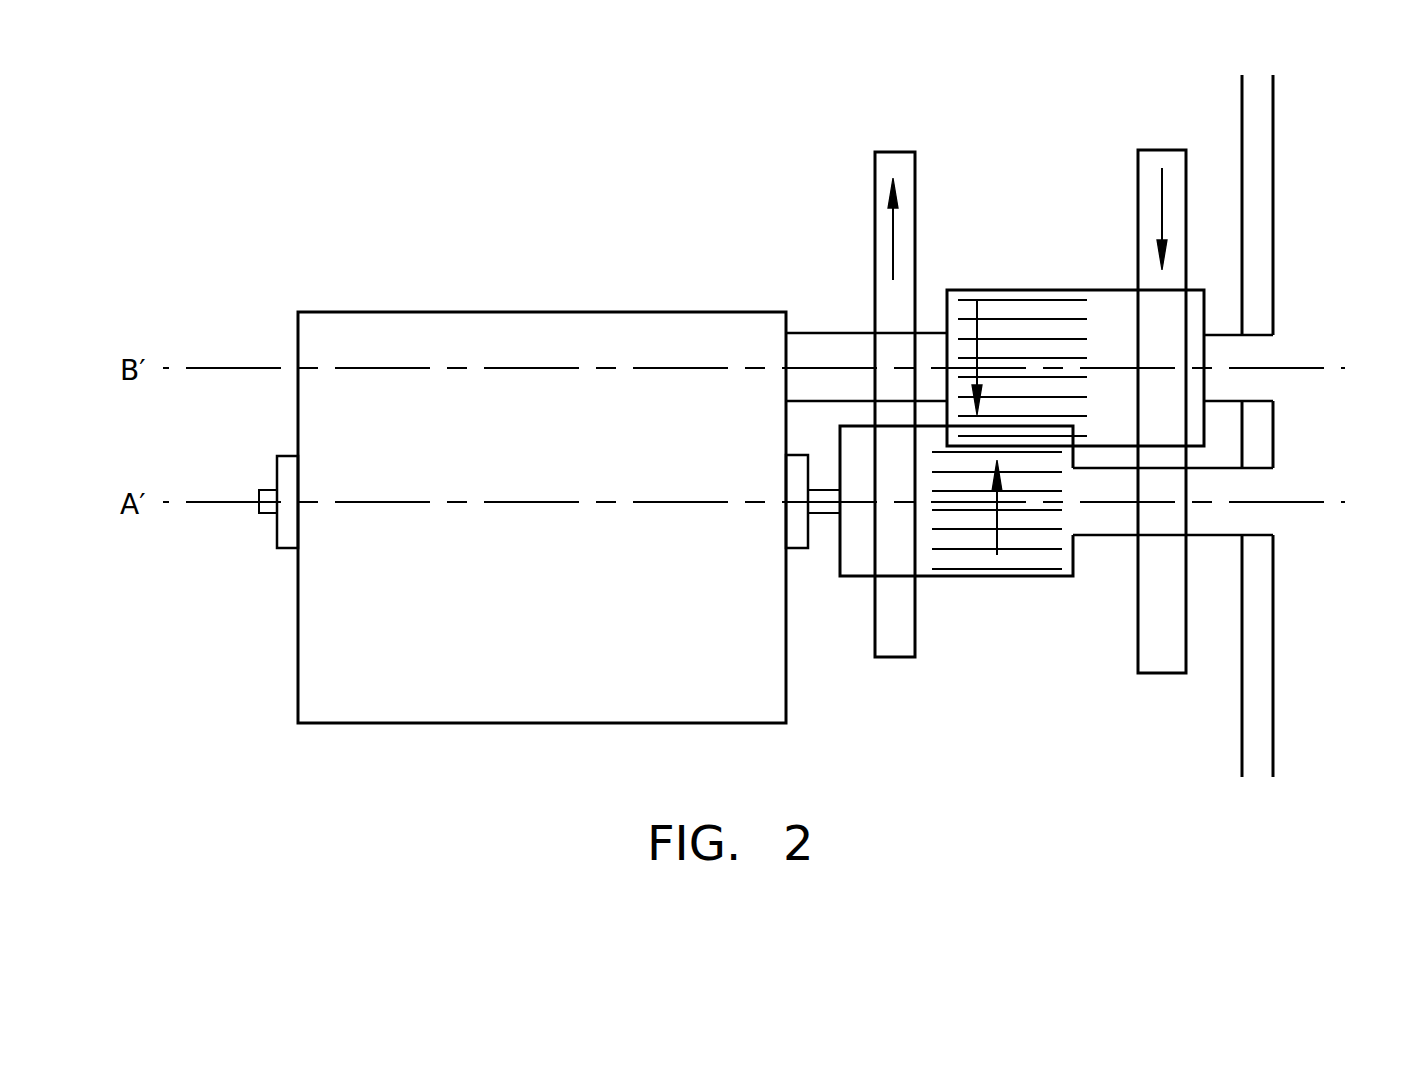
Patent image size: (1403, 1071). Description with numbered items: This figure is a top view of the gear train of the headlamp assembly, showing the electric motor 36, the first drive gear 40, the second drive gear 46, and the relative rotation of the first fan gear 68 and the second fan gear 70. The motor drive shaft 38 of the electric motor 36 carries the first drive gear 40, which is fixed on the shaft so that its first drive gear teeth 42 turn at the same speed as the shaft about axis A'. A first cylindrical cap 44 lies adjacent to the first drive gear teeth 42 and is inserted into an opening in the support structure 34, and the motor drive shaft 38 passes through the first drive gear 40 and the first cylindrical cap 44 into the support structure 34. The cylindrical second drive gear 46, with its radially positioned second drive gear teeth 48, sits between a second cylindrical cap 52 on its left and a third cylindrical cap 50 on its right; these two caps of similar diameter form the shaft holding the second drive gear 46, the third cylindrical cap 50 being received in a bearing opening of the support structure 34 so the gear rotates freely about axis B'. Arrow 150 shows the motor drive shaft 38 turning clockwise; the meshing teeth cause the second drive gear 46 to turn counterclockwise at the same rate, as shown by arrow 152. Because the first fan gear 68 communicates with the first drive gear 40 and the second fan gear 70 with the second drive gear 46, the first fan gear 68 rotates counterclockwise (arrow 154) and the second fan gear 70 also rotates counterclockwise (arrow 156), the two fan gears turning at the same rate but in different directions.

The support structure 34 is at (1275, 716).
The electric motor 36 is at (418, 683).
The motor drive shaft 38 is at (257, 513).
The first drive gear 40 is at (857, 580).
The first drive gear teeth 42 is at (952, 574).
The first cylindrical cap 44 is at (1097, 538).
The second drive gear 46 is at (1033, 300).
The second drive gear teeth 48 is at (1073, 300).
The third cylindrical cap 50 is at (1222, 327).
The second cylindrical cap 52 is at (842, 333).
The first fan gear 68 is at (913, 170).
The second fan gear 70 is at (1187, 192).
The arrow 150 is at (1000, 547).
The arrow 152 is at (980, 303).
The arrow 154 is at (893, 198).
The arrow 156 is at (1160, 190).